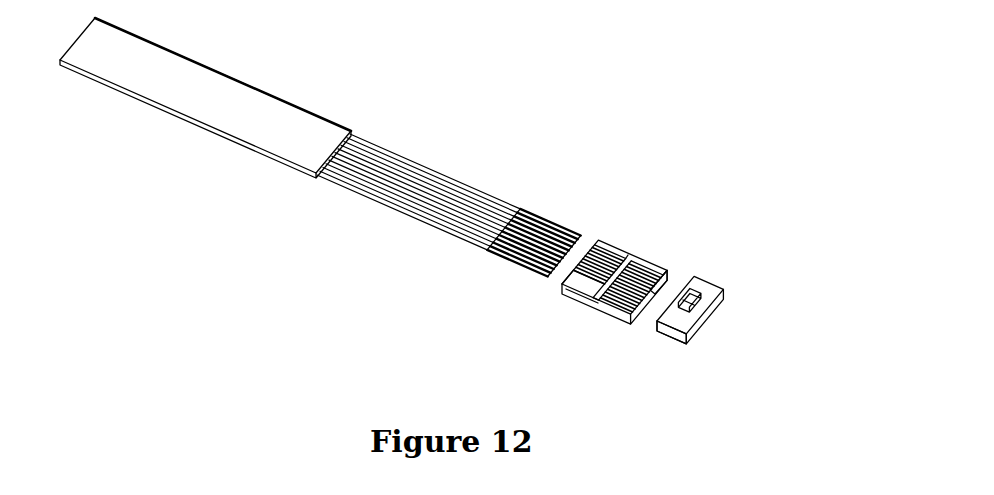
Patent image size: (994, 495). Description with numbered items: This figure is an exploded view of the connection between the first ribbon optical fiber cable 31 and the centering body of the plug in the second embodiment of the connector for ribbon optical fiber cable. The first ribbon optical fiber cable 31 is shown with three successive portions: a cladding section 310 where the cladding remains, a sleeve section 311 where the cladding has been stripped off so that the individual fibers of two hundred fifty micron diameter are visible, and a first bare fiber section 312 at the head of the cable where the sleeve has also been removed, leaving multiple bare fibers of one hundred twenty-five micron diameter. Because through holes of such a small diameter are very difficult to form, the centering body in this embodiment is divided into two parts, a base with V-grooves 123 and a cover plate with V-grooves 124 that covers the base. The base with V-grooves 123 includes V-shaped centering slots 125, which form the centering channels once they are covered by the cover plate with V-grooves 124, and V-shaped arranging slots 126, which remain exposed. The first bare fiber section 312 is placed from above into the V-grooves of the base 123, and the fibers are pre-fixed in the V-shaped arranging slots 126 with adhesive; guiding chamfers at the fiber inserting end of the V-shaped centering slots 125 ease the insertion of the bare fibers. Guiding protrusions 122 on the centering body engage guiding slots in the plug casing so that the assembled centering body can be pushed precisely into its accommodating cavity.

The first ribbon optical fiber cable 31 is at (355, 147).
The cladding section 310 is at (267, 117).
The sleeve section 311 is at (418, 188).
The first bare fiber section 312 is at (543, 220).
The base with V-grooves 123 is at (583, 277).
The V-shaped arranging slots 126 is at (575, 297).
The V-shaped centering slots 125 is at (681, 239).
The cover plate with V-grooves 124 is at (732, 306).
The guiding protrusions 122 is at (663, 330).